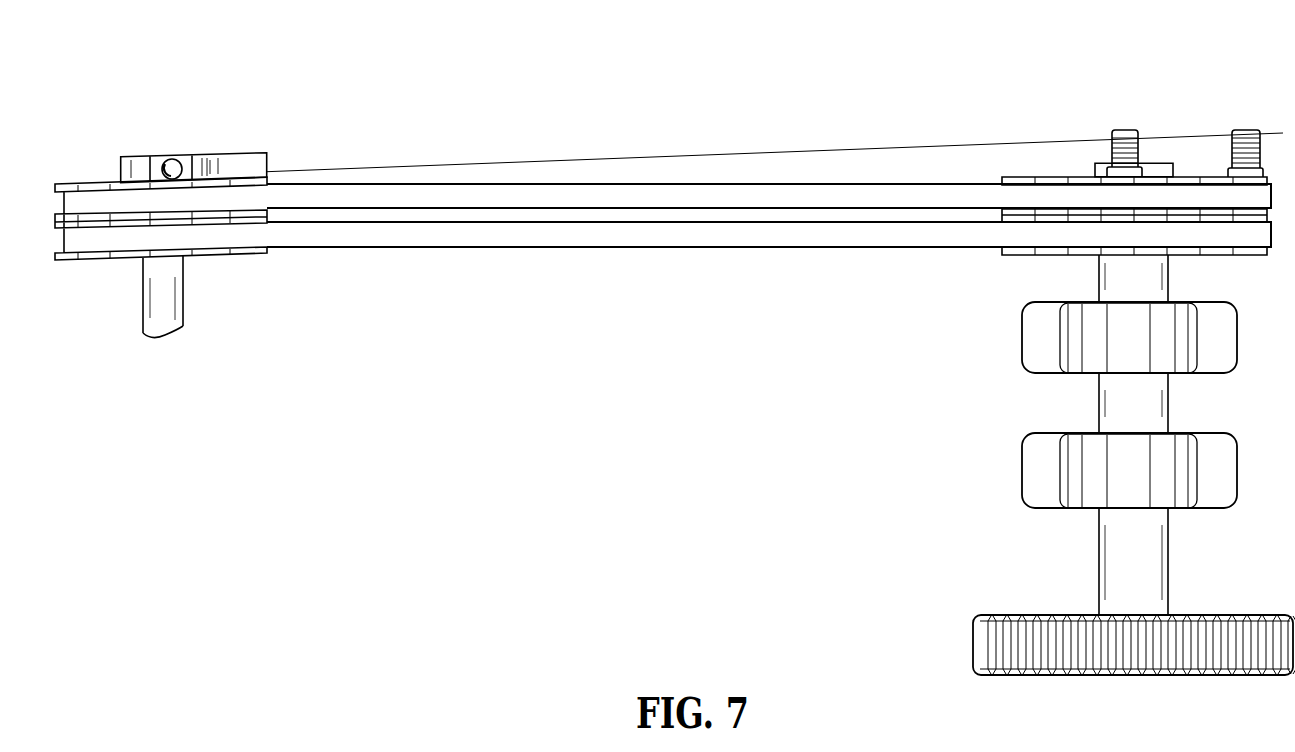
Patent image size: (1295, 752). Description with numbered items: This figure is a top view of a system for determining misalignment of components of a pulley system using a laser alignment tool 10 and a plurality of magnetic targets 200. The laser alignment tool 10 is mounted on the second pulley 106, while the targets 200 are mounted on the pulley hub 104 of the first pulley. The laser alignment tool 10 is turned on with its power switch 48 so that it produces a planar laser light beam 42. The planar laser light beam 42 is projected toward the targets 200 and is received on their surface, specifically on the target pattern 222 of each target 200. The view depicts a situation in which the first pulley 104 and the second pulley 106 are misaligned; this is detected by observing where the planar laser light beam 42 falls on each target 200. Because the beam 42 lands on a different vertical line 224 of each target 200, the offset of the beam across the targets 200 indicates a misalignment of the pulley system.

The laser alignment tool 10 is at (244, 160).
The planar laser light beam 42 is at (540, 160).
The power switch 48 is at (168, 158).
The pulley hub 104 is at (1258, 195).
The second pulley 106 is at (95, 205).
The targets 200 is at (1128, 125).
The target pattern 222 is at (1109, 136).
The vertical line 224 is at (1235, 139).